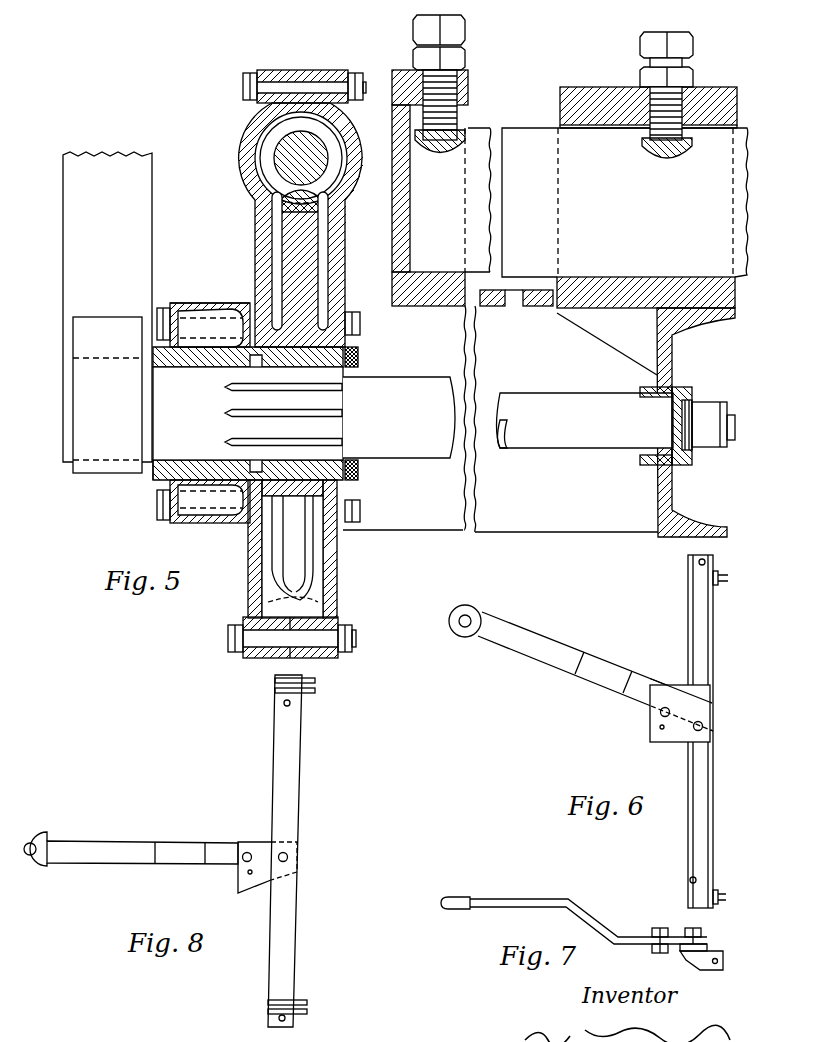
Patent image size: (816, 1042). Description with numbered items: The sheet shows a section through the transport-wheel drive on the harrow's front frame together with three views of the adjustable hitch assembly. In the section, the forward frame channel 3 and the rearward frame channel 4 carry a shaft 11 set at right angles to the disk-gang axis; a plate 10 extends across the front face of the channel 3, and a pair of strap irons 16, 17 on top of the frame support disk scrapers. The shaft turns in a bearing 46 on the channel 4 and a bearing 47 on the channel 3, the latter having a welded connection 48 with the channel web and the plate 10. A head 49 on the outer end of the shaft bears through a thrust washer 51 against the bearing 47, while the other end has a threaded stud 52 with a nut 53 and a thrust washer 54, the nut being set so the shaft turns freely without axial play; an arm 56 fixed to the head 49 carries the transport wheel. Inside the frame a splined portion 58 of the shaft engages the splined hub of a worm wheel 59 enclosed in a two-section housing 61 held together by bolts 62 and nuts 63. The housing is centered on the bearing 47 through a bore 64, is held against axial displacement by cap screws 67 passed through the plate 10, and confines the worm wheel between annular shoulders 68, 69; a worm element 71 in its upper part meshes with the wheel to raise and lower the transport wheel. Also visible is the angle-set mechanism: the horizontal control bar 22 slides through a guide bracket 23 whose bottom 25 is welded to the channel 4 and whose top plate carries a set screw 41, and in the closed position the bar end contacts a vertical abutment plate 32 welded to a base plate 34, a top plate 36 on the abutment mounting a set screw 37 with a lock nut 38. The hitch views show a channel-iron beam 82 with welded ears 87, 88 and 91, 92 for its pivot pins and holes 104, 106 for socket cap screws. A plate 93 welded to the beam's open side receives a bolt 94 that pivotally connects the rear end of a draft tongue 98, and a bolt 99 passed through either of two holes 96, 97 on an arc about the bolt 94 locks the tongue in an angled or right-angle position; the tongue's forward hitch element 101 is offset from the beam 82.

In FIG. 5, the forward frame channel 3 is at (212, 303).
In FIG. 5, the rearward frame channel 4 is at (665, 537).
In FIG. 5, the plate 10 is at (176, 304).
In FIG. 5, the shaft 11 is at (530, 448).
In FIG. 5, the strap iron 16 is at (532, 306).
In FIG. 5, the strap iron 17 is at (489, 306).
In FIG. 5, the horizontal control bar 22 is at (535, 128).
In FIG. 5, the guide bracket 23 is at (602, 87).
In FIG. 5, the bottom 25 is at (612, 277).
In FIG. 5, the forward abutment 32 is at (392, 214).
In FIG. 5, the base plate 34 is at (430, 306).
In FIG. 5, the top plate 36 is at (468, 98).
In FIG. 5, the set screw 37 is at (466, 26).
In FIG. 5, the lock nut 38 is at (466, 62).
In FIG. 5, the set screw 41 is at (684, 32).
In FIG. 5, the bearing 46 is at (676, 388).
In FIG. 5, the bearing 47 is at (188, 368).
In FIG. 5, the welded connection 48 is at (225, 340).
In FIG. 5, the head 49 is at (146, 460).
In FIG. 5, the thrust washer 51 is at (152, 470).
In FIG. 5, the threaded stud 52 is at (731, 412).
In FIG. 5, the nut 53 is at (716, 450).
In FIG. 5, the thrust washer 54 is at (680, 466).
In FIG. 5, the arm 56 is at (63, 296).
In FIG. 5, the splined portion 58 is at (342, 440).
In FIG. 5, the worm wheel 59 is at (323, 284).
In FIG. 5, the housing 61 is at (298, 70).
In FIG. 5, the bolts 62 is at (243, 86).
In FIG. 5, the nuts 63 is at (356, 80).
In FIG. 5, the bore 64 is at (262, 486).
In FIG. 5, the cap screws 67 is at (158, 314).
In FIG. 5, the annular shoulder 68 is at (276, 505).
In FIG. 5, the annular shoulder 69 is at (307, 522).
In FIG. 5, the worm element 71 is at (268, 172).
In FIG. 6, the beam 82 is at (690, 764).
In FIG. 7, the beam 82 is at (708, 948).
In FIG. 8, the beam 82 is at (295, 937).
In FIG. 6, the ear 87 is at (724, 583).
In FIG. 7, the ear 87 is at (712, 970).
In FIG. 8, the ear 87 is at (305, 1001).
In FIG. 6, the ear 88 is at (718, 572).
In FIG. 8, the ear 88 is at (306, 1014).
In FIG. 6, the ear 91 is at (716, 890).
In FIG. 8, the ear 91 is at (312, 694).
In FIG. 6, the ear 92 is at (722, 902).
In FIG. 8, the ear 92 is at (315, 681).
In FIG. 6, the plate 93 is at (670, 690).
In FIG. 8, the plate 93 is at (253, 893).
In FIG. 6, the bolt 94 is at (704, 726).
In FIG. 7, the bolt 94 is at (692, 928).
In FIG. 8, the bolt 94 is at (289, 857).
In FIG. 6, the hole 96 is at (659, 728).
In FIG. 8, the hole 97 is at (247, 874).
In FIG. 6, the draft tongue 98 is at (564, 659).
In FIG. 7, the draft tongue 98 is at (568, 899).
In FIG. 8, the draft tongue 98 is at (133, 843).
In FIG. 6, the bolt 99 is at (663, 706).
In FIG. 7, the bolt 99 is at (658, 928).
In FIG. 8, the bolt 99 is at (247, 852).
In FIG. 6, the hitch element 101 is at (458, 634).
In FIG. 7, the hitch element 101 is at (462, 897).
In FIG. 8, the hitch element 101 is at (38, 833).
In FIG. 6, the hole 104 is at (698, 565).
In FIG. 8, the hole 104 is at (278, 1019).
In FIG. 6, the hole 106 is at (689, 880).
In FIG. 8, the hole 106 is at (283, 703).